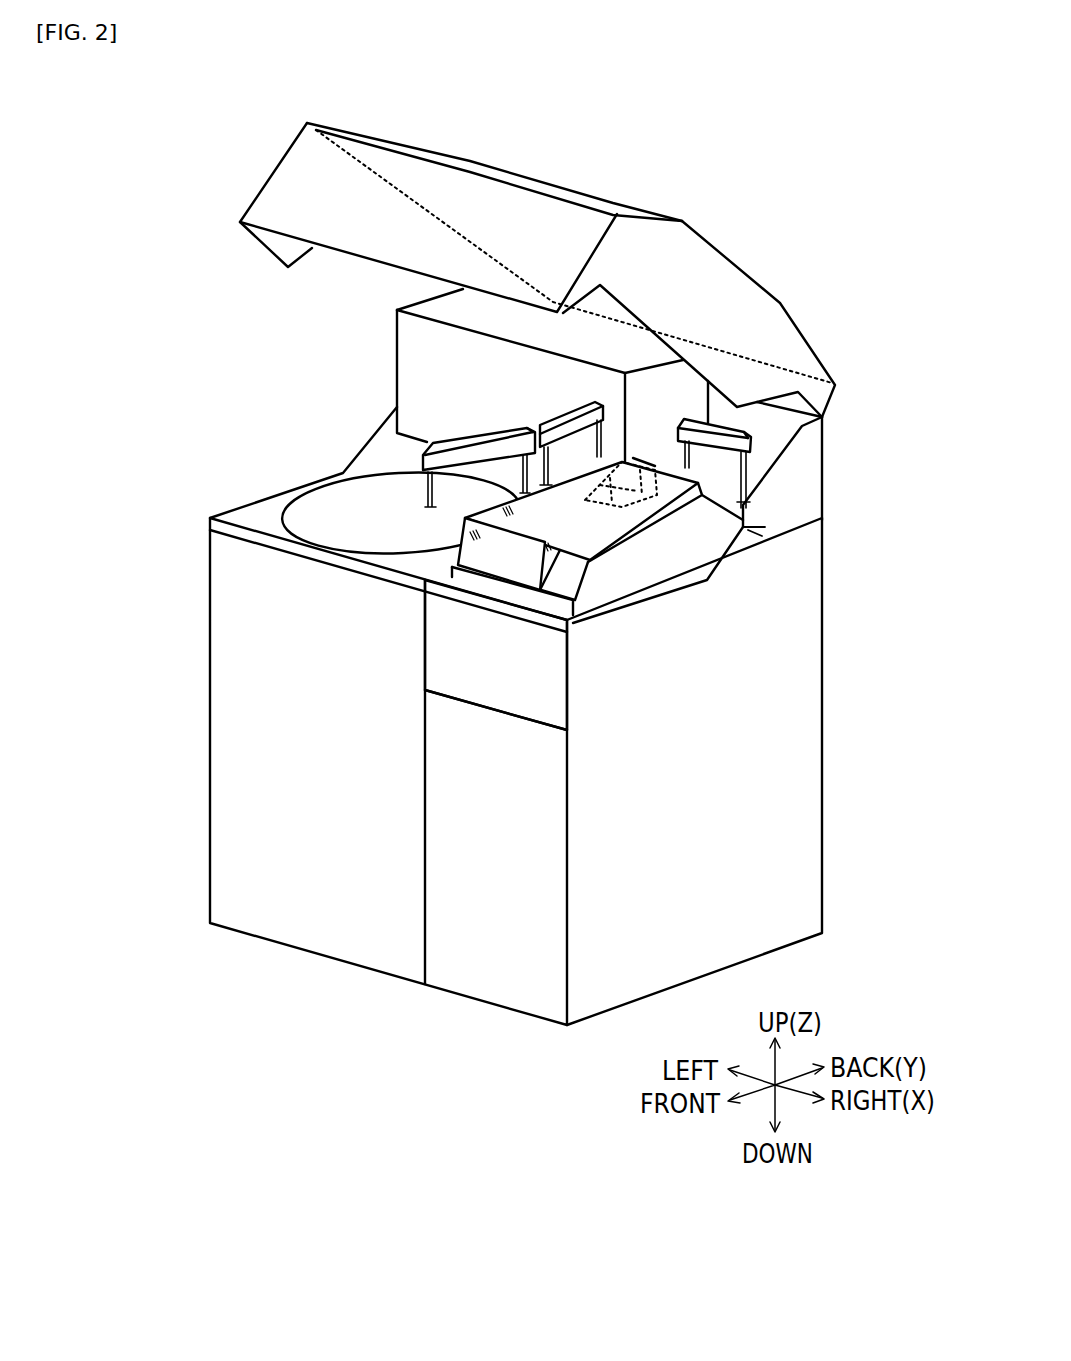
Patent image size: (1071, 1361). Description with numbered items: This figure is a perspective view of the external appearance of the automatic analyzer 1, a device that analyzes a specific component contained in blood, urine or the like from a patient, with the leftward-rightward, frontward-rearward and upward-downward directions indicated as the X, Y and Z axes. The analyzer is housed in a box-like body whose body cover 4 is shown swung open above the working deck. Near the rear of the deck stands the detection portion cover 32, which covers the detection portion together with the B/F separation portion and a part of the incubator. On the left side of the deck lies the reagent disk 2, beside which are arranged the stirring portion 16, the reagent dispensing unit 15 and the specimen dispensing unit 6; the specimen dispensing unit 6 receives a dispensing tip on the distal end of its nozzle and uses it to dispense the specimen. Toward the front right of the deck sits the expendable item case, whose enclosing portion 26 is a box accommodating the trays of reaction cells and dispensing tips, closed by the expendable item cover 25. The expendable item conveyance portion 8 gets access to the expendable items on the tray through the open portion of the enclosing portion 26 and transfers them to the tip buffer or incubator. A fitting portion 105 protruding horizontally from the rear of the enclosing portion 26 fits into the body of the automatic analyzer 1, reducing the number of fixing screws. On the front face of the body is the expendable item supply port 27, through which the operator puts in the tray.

The automatic analyzer 1 is at (228, 122).
The reagent disk 2 is at (322, 515).
The body cover 4 is at (272, 224).
The specimen dispensing unit 6 is at (737, 430).
The expendable item conveyance portion 8 is at (650, 480).
The reagent dispensing unit 15 is at (600, 405).
The stirring portion 16 is at (473, 460).
The expendable item cover 25 is at (553, 522).
The enclosing portion 26 is at (697, 547).
The expendable item supply port 27 is at (510, 668).
The detection portion cover 32 is at (423, 357).
The fitting portion 105 is at (753, 527).